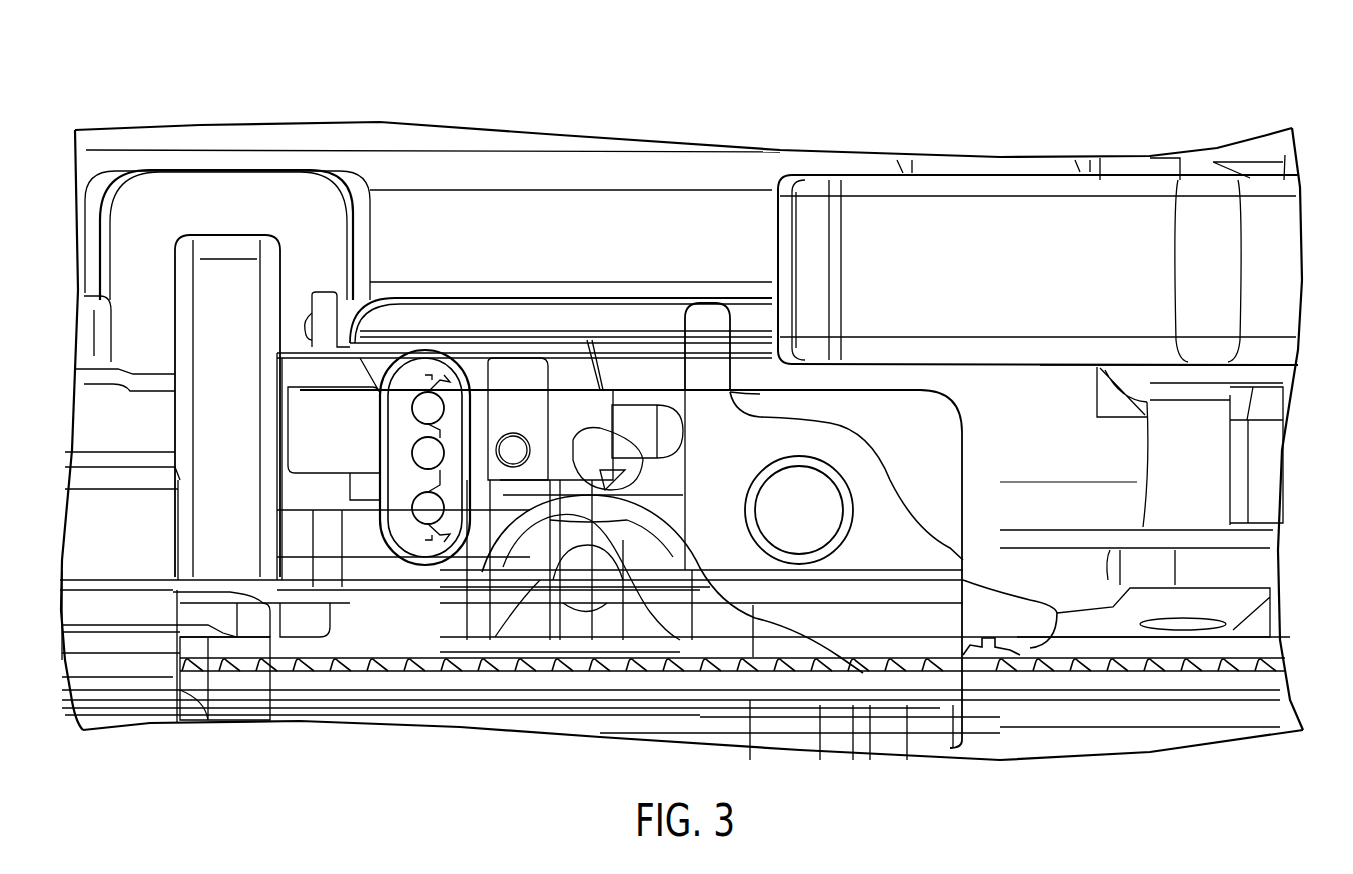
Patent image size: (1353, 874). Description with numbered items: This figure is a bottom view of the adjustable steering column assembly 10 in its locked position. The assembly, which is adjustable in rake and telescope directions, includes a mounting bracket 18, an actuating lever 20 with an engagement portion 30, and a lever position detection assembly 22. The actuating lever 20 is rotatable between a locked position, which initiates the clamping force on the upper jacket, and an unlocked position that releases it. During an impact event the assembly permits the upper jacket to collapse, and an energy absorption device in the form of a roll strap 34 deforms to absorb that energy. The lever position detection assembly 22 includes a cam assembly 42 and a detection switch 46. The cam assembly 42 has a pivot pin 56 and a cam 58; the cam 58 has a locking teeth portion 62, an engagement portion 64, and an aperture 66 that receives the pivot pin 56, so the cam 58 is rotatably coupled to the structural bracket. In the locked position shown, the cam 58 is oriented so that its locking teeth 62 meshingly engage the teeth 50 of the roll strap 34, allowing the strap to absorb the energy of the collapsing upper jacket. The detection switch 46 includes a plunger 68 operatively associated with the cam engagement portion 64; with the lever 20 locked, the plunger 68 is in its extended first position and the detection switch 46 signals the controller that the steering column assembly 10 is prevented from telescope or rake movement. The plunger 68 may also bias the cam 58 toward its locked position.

The adjustable steering column assembly 10 is at (1300, 84).
The mounting bracket 18 is at (498, 132).
The actuating lever 20 is at (1200, 160).
The lever position detection assembly 22 is at (356, 745).
The engagement portion 30 is at (813, 248).
The roll strap 34 is at (1015, 690).
The cam assembly 42 is at (742, 388).
The detection switch 46 is at (414, 382).
The teeth 50 is at (1238, 665).
The pivot pin 56 is at (797, 547).
The cam 58 is at (845, 452).
The locking teeth portion 62 is at (976, 652).
The engagement portion 64 is at (706, 322).
The aperture 66 is at (838, 543).
The plunger 68 is at (648, 415).